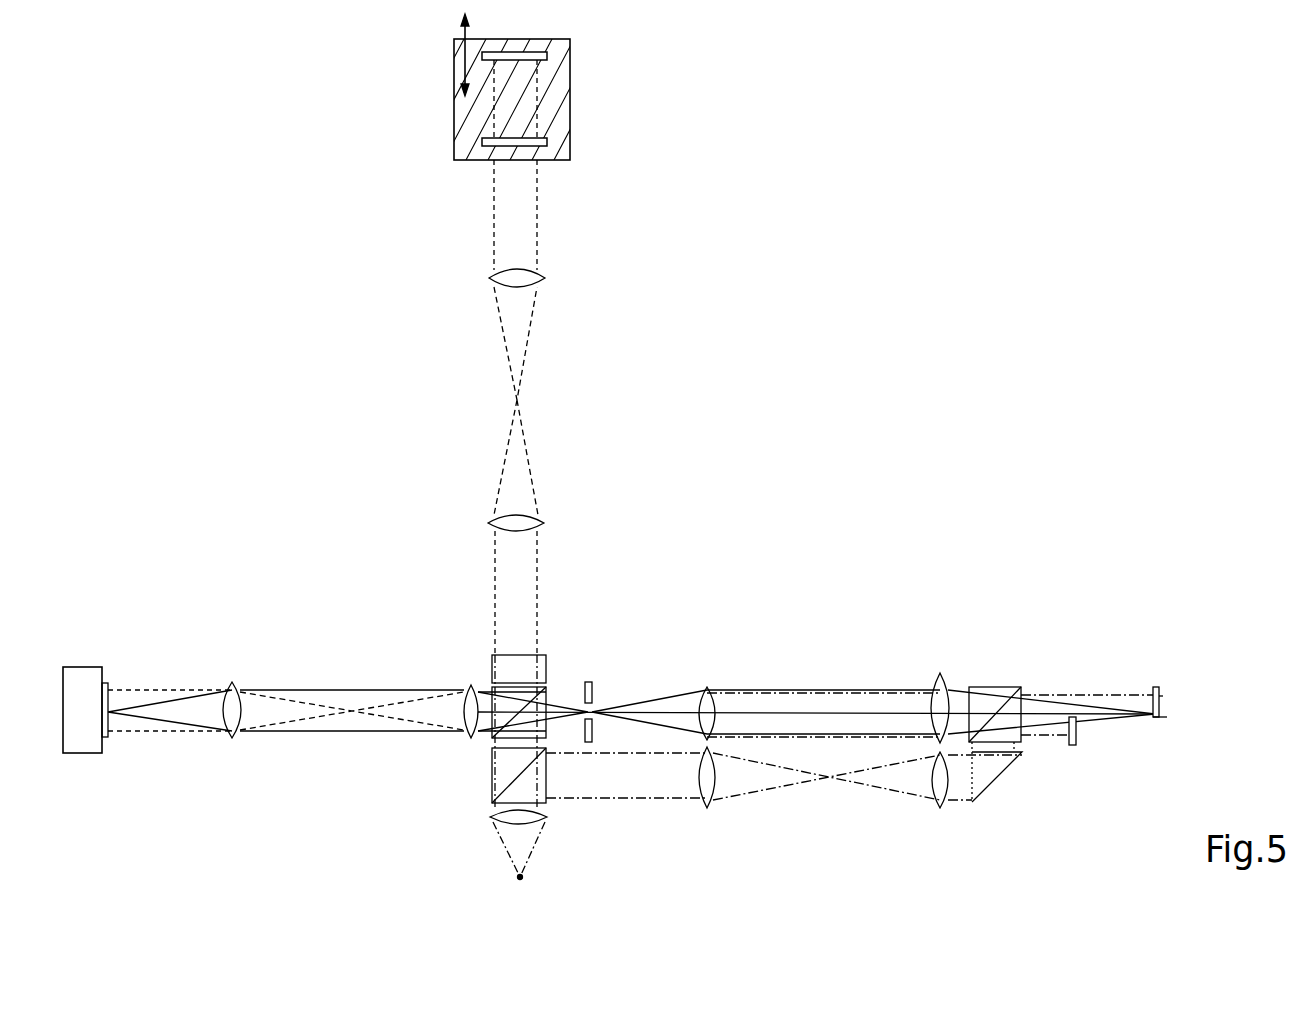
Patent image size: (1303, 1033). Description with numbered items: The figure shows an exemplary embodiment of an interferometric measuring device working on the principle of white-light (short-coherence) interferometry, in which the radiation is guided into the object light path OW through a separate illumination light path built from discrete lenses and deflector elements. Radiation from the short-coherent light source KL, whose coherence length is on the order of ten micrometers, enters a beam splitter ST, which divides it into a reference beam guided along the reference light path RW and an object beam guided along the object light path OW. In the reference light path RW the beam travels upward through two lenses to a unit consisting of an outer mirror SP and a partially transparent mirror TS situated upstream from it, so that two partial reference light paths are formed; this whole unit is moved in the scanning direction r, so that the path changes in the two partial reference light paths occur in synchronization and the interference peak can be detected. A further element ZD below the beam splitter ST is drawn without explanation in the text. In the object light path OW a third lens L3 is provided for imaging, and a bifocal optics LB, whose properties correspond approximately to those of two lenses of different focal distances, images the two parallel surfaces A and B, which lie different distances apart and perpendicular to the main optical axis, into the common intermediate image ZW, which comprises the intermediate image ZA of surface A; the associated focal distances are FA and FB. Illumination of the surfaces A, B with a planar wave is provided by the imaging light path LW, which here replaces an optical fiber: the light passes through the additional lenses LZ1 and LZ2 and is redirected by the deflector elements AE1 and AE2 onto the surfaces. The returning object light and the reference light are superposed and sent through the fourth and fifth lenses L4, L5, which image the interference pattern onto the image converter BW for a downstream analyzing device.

The scanning direction r is at (454, 53).
The outer mirror SP is at (572, 54).
The partially transparent mirror TS is at (571, 136).
The reference light path RW is at (470, 411).
The image converter BW is at (116, 681).
The fifth lens L5 is at (237, 680).
The fourth lens L4 is at (462, 685).
The beam splitter ST is at (483, 740).
The beam splitter ZD is at (538, 775).
The short-coherent light source KL is at (516, 877).
The intermediate image of surface A ZA is at (584, 684).
The common intermediate image ZW is at (598, 676).
The third lens L3 is at (710, 687).
The object light path OW is at (825, 689).
The bifocal optics LB is at (936, 674).
The deflector element AE2 is at (994, 687).
The focal distance for surface A FA is at (1073, 692).
The focal distance for surface B FB is at (1158, 685).
The surface A is at (1073, 748).
The surface B is at (1163, 697).
The additional lens LZ1 is at (703, 810).
The imaging light path LW is at (796, 790).
The additional lens LZ2 is at (936, 810).
The deflector element AE1 is at (1000, 786).